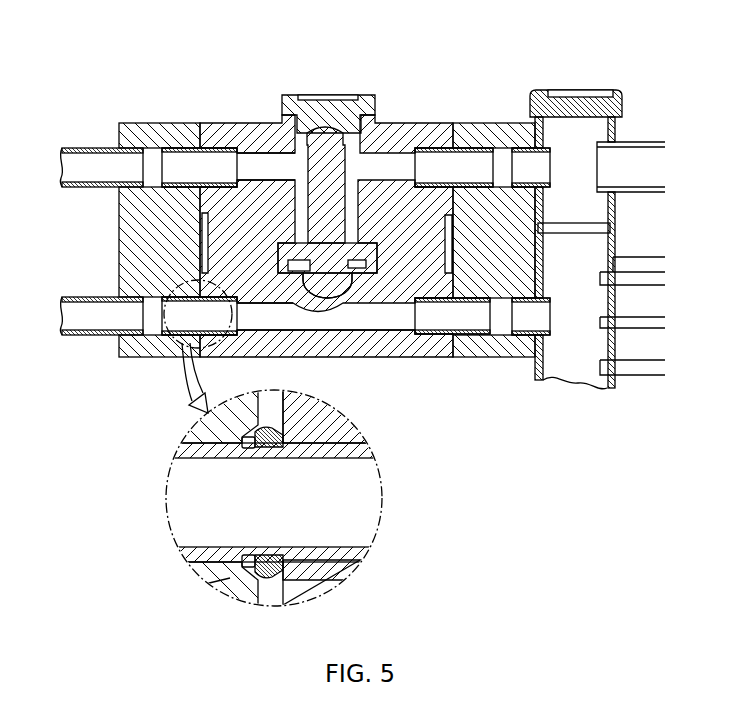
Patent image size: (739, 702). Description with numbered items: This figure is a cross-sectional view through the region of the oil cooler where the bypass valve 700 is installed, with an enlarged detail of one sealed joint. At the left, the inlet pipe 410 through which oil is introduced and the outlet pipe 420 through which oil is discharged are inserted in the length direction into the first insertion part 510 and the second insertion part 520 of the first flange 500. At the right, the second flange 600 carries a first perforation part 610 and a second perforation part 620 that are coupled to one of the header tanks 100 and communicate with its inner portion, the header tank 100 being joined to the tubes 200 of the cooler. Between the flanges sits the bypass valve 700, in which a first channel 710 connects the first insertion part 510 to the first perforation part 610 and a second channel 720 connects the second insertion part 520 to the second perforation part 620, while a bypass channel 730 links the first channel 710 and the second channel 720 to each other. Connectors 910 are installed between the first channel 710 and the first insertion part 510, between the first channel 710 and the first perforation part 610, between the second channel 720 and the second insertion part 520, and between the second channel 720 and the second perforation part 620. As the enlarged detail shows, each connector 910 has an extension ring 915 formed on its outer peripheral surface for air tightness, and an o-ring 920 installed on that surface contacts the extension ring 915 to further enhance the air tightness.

The header tank 100 is at (600, 78).
The tubes 200 is at (667, 273).
The inlet pipe 410 is at (90, 147).
The outlet pipe 420 is at (62, 297).
The first flange 500 is at (120, 116).
The first insertion part 510 is at (158, 161).
The second insertion part 520 is at (152, 314).
The second flange 600 is at (463, 92).
The first perforation part 610 is at (500, 164).
The second perforation part 620 is at (508, 321).
The bypass valve 700 is at (353, 208).
The first channel 710 is at (268, 166).
The second channel 720 is at (352, 321).
The bypass channel 730 is at (369, 250).
The connector 910 is at (204, 138).
The extension ring 915 is at (216, 583).
The o-ring 920 is at (247, 555).